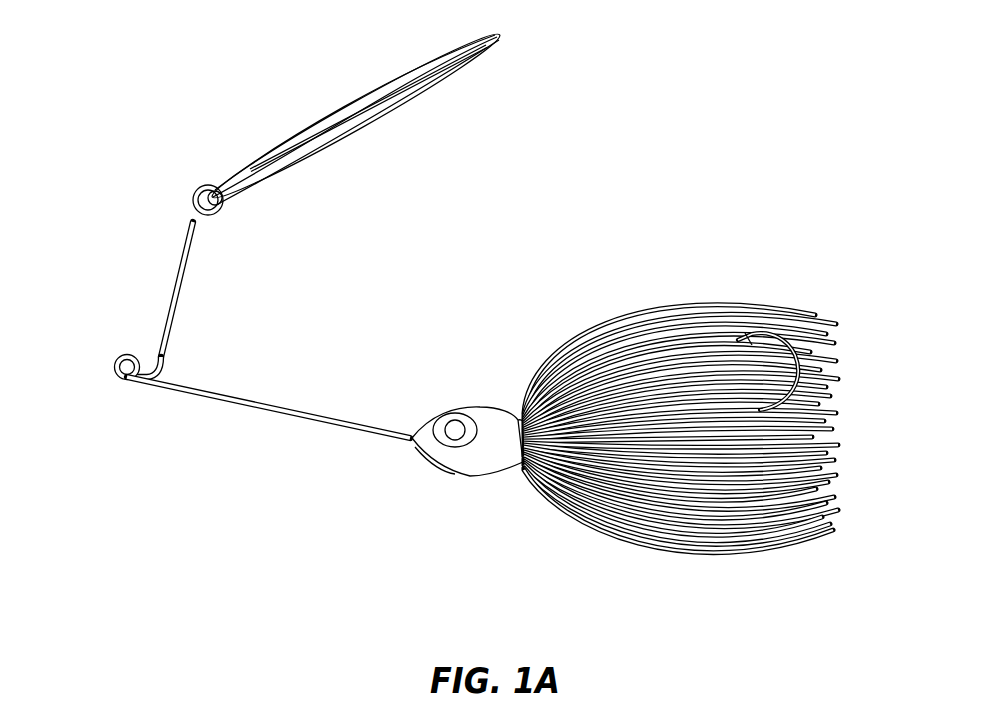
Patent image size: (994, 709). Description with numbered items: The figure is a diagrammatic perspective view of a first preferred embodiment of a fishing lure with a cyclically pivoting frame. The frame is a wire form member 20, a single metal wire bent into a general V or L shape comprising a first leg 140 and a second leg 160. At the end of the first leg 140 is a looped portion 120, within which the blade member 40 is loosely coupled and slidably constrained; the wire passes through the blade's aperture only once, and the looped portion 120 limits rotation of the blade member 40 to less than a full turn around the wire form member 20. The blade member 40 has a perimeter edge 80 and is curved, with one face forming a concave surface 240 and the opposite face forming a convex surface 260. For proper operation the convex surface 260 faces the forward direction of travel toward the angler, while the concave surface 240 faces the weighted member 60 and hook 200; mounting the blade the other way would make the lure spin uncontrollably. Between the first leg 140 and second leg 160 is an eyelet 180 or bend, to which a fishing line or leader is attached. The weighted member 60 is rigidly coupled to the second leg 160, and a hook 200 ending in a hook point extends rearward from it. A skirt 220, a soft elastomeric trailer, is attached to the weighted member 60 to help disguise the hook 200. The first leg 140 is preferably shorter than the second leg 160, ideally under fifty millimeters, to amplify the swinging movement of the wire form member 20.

The wire form member 20 is at (168, 312).
The blade member 40 is at (373, 83).
The weighted member 60 is at (480, 464).
The perimeter edge 80 is at (427, 70).
The looped portion 120 is at (243, 205).
The first leg 140 is at (140, 165).
The second leg 160 is at (405, 450).
The eyelet 180 is at (117, 377).
The hook 200 is at (692, 332).
The skirt 220 is at (630, 540).
The concave surface 240 is at (333, 132).
The convex surface 260 is at (322, 112).